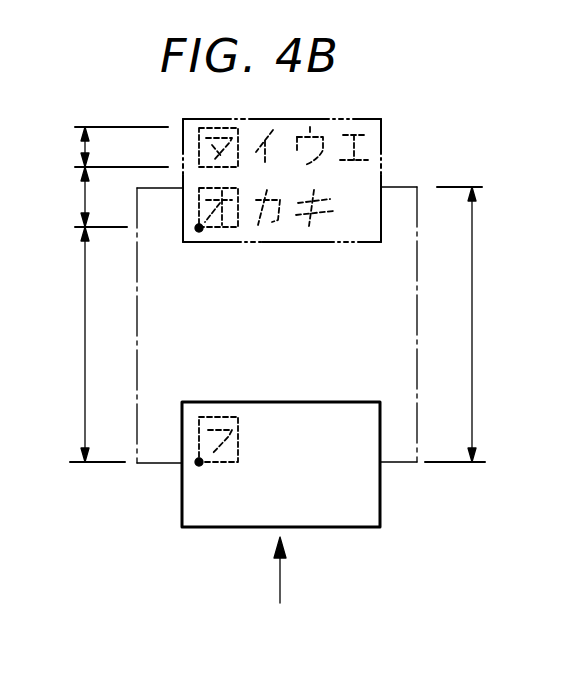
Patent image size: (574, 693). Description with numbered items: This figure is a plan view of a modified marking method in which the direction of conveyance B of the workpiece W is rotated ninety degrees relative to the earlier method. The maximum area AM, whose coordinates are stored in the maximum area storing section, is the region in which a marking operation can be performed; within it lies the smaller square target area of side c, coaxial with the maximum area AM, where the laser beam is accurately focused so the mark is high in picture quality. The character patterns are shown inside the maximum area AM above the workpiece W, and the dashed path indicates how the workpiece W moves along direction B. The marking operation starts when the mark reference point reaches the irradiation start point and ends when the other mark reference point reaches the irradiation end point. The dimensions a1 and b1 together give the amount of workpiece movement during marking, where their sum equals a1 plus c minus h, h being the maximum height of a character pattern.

The maximum area AM is at (397, 187).
The workpiece W is at (380, 498).
The direction of conveyance B is at (270, 570).
The maximum height of a character pattern h is at (112, 147).
The first movement distance a1 is at (87, 197).
The second movement distance b1 is at (87, 344).
The side of the target area C is at (459, 324).